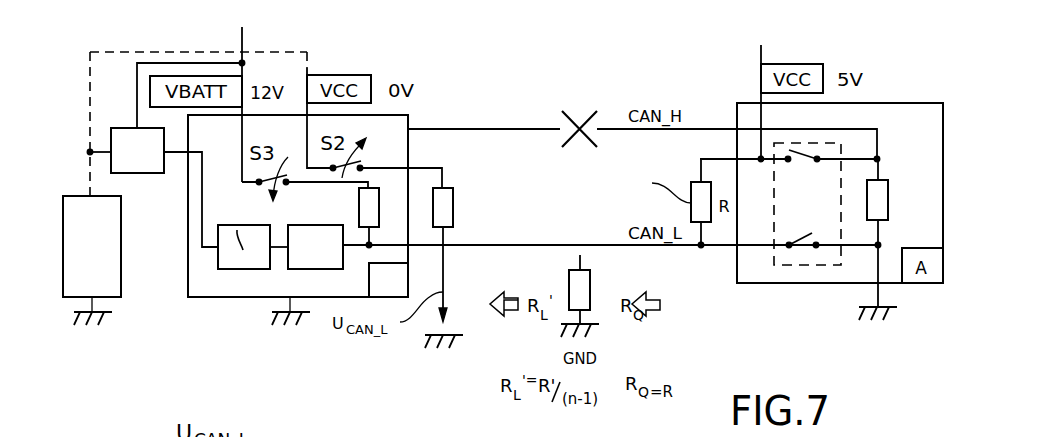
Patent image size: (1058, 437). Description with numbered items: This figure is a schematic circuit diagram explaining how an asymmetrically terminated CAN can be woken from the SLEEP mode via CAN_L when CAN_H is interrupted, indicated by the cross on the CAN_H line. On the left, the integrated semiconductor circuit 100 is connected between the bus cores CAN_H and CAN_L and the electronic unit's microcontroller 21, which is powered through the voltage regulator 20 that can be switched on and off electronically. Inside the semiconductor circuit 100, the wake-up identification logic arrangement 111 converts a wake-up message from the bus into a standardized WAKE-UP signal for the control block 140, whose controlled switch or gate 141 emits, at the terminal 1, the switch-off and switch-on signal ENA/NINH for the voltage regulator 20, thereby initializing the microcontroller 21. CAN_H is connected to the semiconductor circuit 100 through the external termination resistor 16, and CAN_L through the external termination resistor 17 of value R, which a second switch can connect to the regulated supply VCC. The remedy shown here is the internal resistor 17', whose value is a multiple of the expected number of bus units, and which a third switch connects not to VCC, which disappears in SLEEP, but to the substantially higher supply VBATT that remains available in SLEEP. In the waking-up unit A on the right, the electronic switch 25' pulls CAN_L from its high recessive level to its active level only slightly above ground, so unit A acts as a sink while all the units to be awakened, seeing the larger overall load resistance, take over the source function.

The terminal 1 is at (182, 152).
The voltage regulator 20 is at (164, 118).
The microcontroller 21 is at (92, 276).
The integrated semiconductor circuit 100 is at (200, 297).
The wake-up identification logic arrangement 111 is at (315, 247).
The control block 140 is at (258, 269).
The controlled switch or gate 141 is at (242, 237).
The termination resistor 17 is at (467, 280).
The internal resistor 17' is at (348, 218).
The termination resistor 16 is at (888, 190).
The electronic switch 25' is at (810, 285).